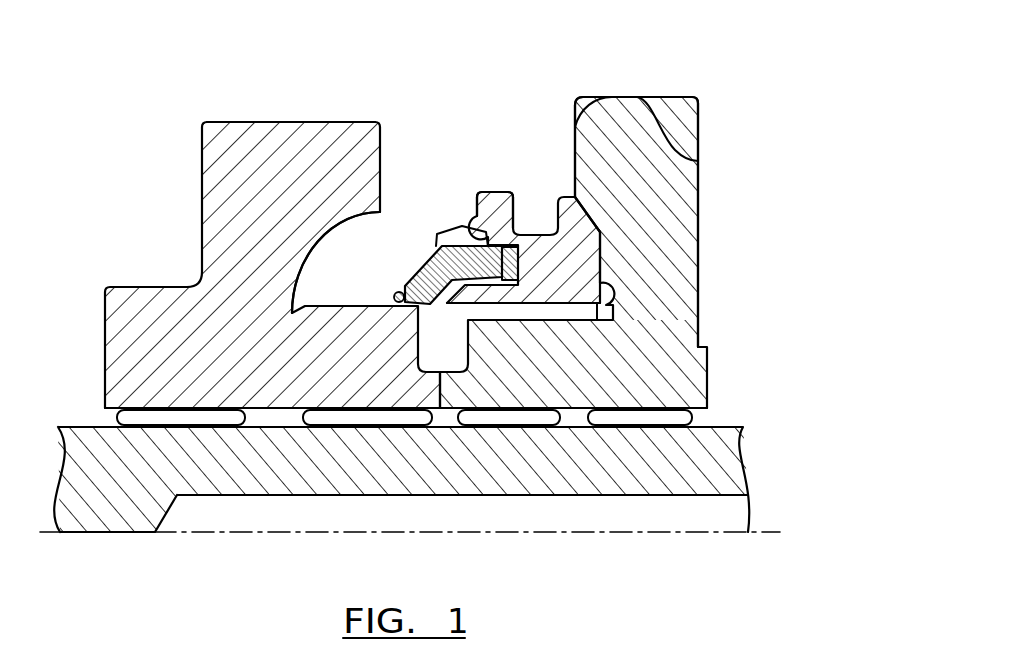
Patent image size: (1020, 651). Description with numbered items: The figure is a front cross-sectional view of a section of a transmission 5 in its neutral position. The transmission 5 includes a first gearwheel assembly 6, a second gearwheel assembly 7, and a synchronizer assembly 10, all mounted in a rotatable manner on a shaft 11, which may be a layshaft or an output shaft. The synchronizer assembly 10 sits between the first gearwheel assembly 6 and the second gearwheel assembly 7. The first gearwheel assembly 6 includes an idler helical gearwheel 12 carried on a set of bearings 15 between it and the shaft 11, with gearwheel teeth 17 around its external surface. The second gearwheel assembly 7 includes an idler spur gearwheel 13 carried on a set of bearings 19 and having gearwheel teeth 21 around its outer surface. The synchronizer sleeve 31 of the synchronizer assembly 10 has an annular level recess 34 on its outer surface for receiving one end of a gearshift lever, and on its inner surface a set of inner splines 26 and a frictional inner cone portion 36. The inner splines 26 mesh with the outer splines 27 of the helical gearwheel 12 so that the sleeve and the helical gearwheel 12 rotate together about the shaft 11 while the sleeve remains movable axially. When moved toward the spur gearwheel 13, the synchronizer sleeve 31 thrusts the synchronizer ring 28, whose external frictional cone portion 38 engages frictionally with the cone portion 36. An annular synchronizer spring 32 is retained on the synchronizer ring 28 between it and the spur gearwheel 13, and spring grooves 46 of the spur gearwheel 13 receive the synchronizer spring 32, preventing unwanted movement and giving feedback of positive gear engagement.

The transmission 5 is at (441, 293).
The first gearwheel assembly 6 is at (456, 210).
The second gearwheel assembly 7 is at (237, 206).
The synchronizer assembly 10 is at (468, 154).
The shaft 11 is at (718, 460).
The idler helical gearwheel 12 is at (702, 186).
The idler spur gearwheel 13 is at (198, 170).
The set of bearings 15 is at (522, 418).
The set of gearwheel teeth 17 is at (630, 96).
The set of bearings 19 is at (203, 418).
The set of gearwheel teeth 21 is at (292, 122).
The inner splines 26 is at (456, 252).
The outer splines 27 is at (550, 315).
The synchronizer ring 28 is at (423, 267).
The synchronizer sleeve 31 is at (492, 186).
The synchronizer spring 32 is at (393, 298).
The annular level recess 34 is at (547, 252).
The frictional inner cone portion 36 is at (453, 230).
The external frictional cone portion 38 is at (513, 283).
The spring grooves 46 is at (293, 313).